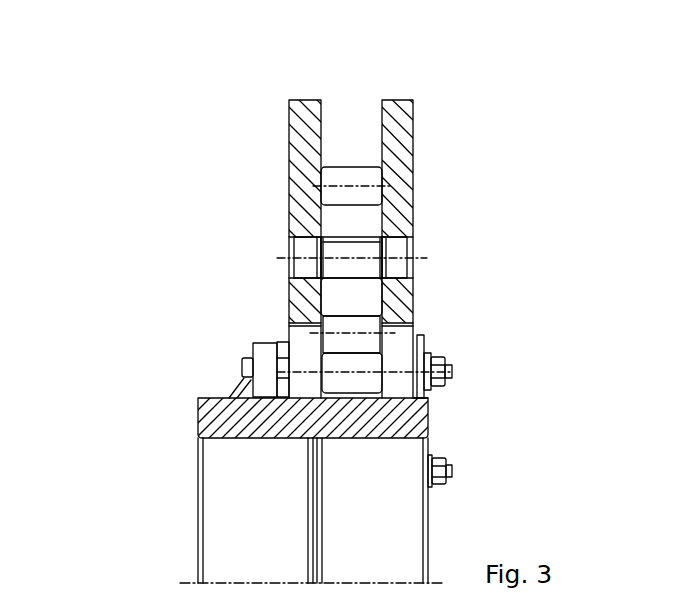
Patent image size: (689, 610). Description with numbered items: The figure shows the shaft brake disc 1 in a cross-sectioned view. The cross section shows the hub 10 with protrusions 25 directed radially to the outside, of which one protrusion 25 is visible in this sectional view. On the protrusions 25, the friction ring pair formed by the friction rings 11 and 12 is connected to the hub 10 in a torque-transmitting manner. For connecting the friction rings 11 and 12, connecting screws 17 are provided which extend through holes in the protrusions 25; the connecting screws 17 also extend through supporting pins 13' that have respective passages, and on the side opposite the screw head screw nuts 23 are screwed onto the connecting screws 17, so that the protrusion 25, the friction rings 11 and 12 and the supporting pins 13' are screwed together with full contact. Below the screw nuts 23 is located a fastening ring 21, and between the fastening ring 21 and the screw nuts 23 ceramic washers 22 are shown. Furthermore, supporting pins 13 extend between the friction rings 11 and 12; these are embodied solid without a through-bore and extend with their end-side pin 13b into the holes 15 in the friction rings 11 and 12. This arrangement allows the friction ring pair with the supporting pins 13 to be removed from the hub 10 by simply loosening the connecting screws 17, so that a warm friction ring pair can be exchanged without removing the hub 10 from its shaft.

The shaft brake disc 1 is at (124, 152).
The hub 10 is at (198, 513).
The friction ring 11 is at (413, 100).
The friction ring 12 is at (290, 100).
The supporting pins 13 is at (381, 221).
The supporting pins 13' is at (380, 319).
The end-side pin 13b is at (300, 267).
The holes 15 is at (305, 233).
The connecting screws 17 is at (242, 358).
The fastening ring 21 is at (422, 335).
The ceramic washers 22 is at (428, 398).
The screw nuts 23 is at (438, 357).
The protrusions 25 is at (260, 342).